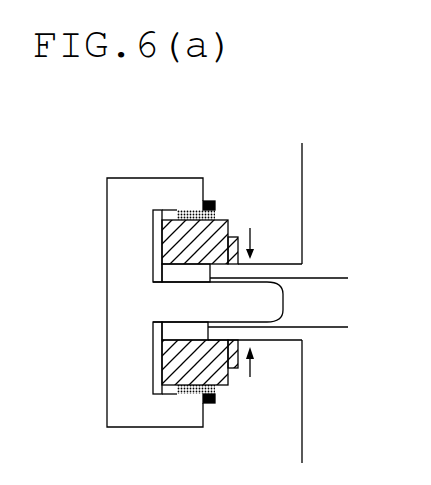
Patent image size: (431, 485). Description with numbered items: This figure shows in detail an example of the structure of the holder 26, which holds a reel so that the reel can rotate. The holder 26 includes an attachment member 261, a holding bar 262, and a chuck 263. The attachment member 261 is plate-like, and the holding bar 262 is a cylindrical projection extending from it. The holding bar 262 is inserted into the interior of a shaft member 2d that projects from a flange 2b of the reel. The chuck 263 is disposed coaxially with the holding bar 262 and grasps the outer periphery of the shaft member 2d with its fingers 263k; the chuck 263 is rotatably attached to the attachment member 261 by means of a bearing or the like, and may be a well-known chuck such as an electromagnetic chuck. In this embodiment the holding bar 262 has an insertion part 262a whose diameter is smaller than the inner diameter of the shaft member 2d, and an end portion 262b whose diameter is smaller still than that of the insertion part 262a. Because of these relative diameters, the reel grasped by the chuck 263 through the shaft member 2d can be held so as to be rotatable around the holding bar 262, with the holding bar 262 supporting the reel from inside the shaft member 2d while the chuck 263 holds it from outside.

The holder 26 is at (218, 186).
The attachment member 261 is at (125, 178).
The holding bar 262 is at (190, 293).
The chuck 263 is at (182, 238).
The insertion part 262a is at (232, 303).
The end portion 262b is at (268, 303).
The fingers 263k is at (230, 372).
The flange 2b is at (301, 202).
The shaft member 2d is at (273, 264).